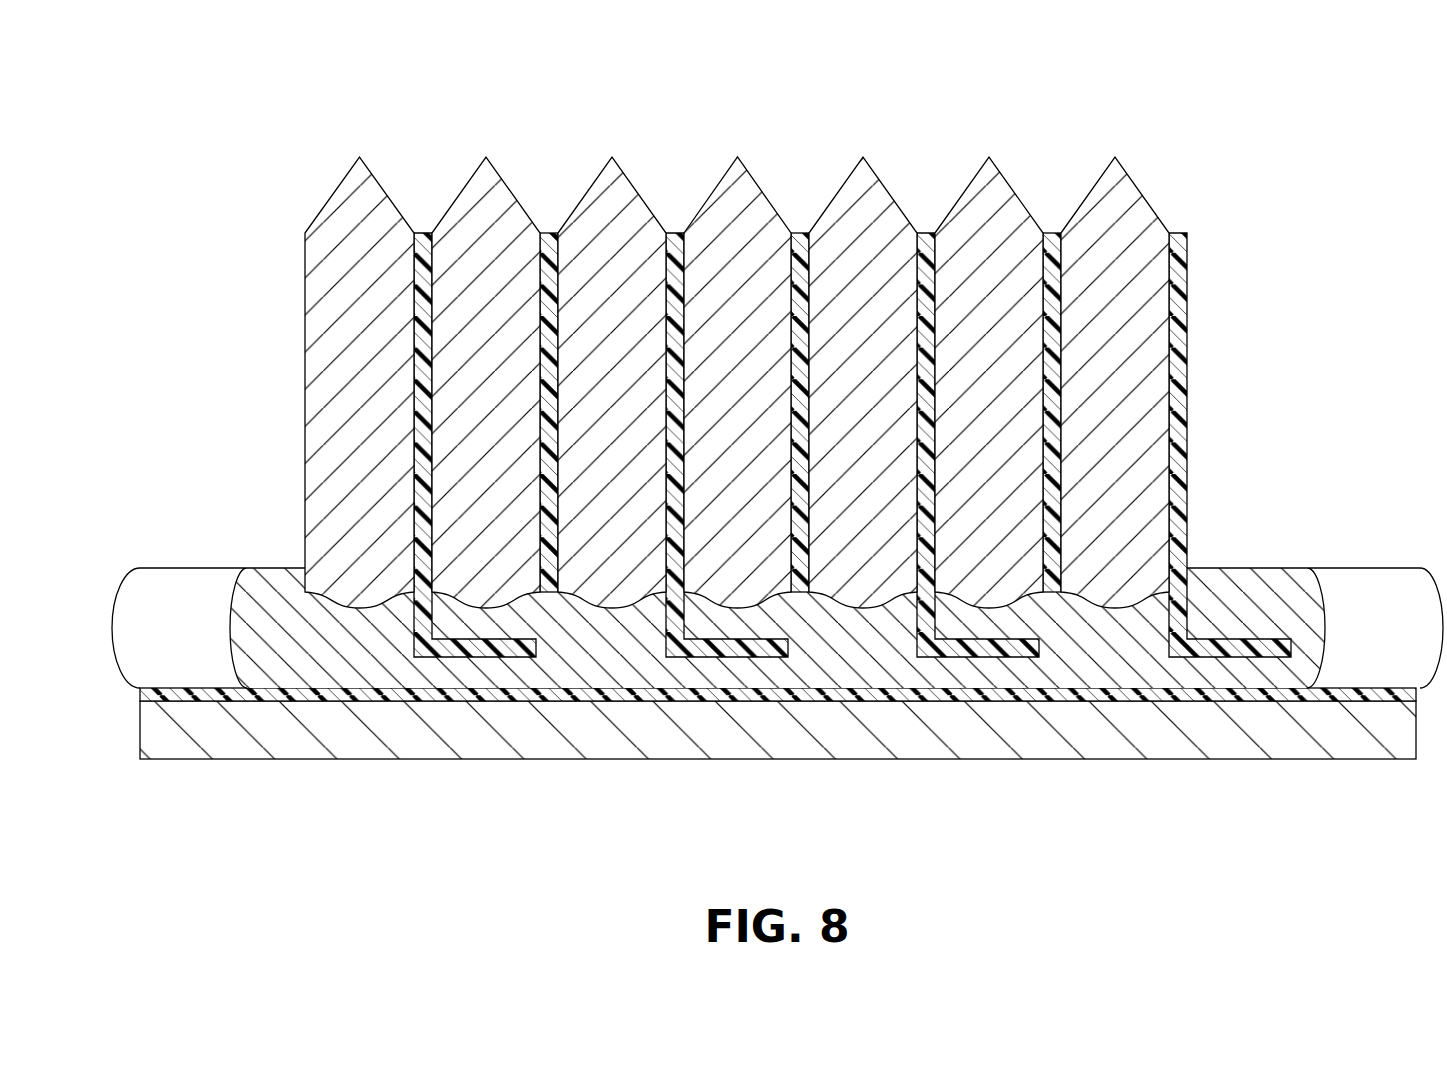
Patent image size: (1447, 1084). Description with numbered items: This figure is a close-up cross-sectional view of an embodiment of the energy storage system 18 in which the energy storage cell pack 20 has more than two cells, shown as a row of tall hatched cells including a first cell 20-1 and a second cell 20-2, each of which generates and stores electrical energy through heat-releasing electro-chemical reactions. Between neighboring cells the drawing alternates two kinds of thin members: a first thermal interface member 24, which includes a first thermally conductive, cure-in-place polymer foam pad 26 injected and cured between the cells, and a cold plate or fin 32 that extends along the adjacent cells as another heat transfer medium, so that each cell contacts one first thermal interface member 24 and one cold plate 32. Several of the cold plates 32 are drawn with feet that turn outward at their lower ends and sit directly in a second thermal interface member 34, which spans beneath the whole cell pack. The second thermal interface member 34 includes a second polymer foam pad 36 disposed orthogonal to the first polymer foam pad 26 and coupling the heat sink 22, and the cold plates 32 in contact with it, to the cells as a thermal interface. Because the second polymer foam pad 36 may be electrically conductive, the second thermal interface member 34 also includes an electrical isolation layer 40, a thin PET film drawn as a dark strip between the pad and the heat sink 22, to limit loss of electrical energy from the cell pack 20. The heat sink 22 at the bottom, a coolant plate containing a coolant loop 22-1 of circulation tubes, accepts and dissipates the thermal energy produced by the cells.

The energy storage system 18 is at (1335, 132).
The energy storage cell pack 20 is at (798, 374).
The first cell 20-1 is at (470, 182).
The second cell 20-2 is at (628, 178).
The heat sink 22 is at (778, 764).
The coolant loop 22-1 is at (665, 742).
The first thermal interface member 24 is at (556, 357).
The first thermally conductive, cure-in-place, polymer foam pad 26 is at (549, 282).
The cold plate 32 is at (421, 232).
The second thermal interface member 34 is at (777, 644).
The second thermally conductive, cure-in-place, polymer foam pad 36 is at (387, 666).
The electrical isolation layer 40 is at (138, 692).